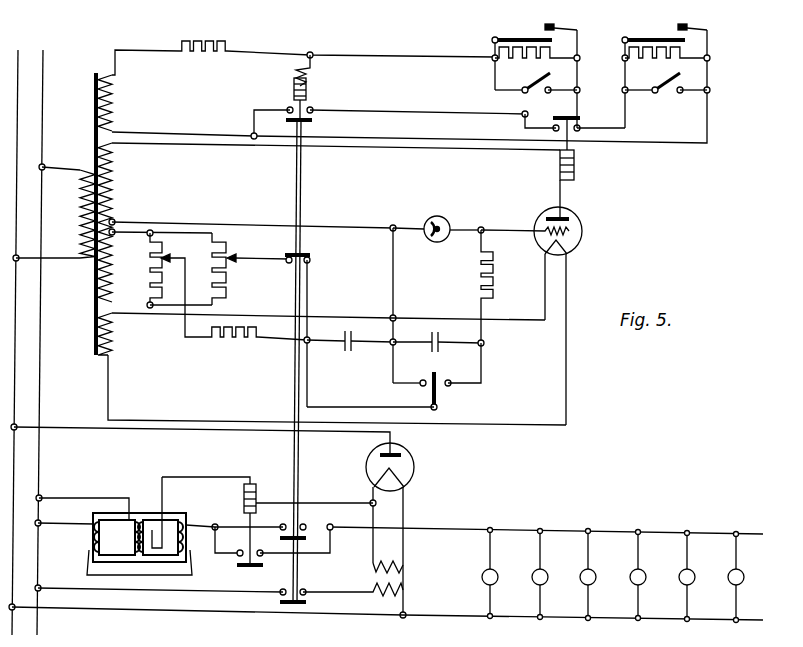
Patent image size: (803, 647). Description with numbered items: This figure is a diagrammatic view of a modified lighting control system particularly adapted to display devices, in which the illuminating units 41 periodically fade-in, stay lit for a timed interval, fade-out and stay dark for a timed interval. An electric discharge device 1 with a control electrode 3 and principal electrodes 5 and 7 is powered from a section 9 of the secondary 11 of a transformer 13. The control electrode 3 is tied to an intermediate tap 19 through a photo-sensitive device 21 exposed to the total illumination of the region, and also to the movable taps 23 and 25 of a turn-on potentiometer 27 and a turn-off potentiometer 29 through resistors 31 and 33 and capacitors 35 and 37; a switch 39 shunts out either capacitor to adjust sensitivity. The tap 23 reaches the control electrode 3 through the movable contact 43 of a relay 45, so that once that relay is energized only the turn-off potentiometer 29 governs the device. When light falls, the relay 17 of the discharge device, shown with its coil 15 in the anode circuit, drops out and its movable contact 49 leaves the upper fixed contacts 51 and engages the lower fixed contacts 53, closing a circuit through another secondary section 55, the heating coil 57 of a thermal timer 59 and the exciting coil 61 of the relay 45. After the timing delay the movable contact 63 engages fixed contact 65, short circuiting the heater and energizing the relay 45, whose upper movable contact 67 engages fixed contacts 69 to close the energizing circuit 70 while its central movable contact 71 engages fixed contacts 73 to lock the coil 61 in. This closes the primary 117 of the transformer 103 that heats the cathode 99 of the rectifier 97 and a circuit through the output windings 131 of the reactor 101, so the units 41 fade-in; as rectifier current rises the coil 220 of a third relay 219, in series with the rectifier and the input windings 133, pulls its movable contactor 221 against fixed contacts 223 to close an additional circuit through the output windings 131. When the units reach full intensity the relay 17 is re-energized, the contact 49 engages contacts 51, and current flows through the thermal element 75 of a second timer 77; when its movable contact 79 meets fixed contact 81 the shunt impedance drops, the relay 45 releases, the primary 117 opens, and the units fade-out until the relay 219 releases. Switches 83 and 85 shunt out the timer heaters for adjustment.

The electric discharge device 1 is at (543, 218).
The control electrode 3 is at (541, 229).
The anode 5 is at (566, 214).
The principal electrode 7 is at (576, 247).
The section of the secondary 9 is at (113, 192).
The secondary 11 is at (134, 163).
The transformer 13 is at (80, 161).
The relay coil 15 is at (575, 165).
The relay 17 is at (563, 137).
The intermediate tap 19 is at (114, 222).
The photo-sensitive device 21 is at (440, 220).
The movable tap 23 is at (258, 248).
The movable tap 25 is at (185, 286).
The turn-on potentiometer 27 is at (227, 286).
The turn-off potentiometer 29 is at (148, 276).
The resistor 31 is at (494, 271).
The resistor 33 is at (233, 338).
The capacitor 35 is at (435, 351).
The capacitor 37 is at (347, 351).
The switch 39 is at (437, 397).
The illuminating units 41 is at (522, 584).
The movable contact 43 is at (309, 253).
The relay 45 is at (299, 97).
The movable contact 49 is at (582, 119).
The upper fixed contacts 51 is at (564, 116).
The lower fixed contacts 53 is at (553, 129).
The section of the secondary 55 is at (113, 110).
The heating coil 57 is at (663, 62).
The thermal timer 59 is at (682, 66).
The exciting coil 61 is at (294, 92).
The movable contact 63 is at (680, 30).
The fixed contact 65 is at (689, 26).
The upper movable contact 67 is at (306, 538).
The fixed contacts 69 is at (304, 524).
The energizing circuit 70 is at (267, 520).
The central movable contact 71 is at (313, 122).
The fixed contacts 73 is at (287, 113).
The thermal element 75 is at (526, 62).
The second timer 77 is at (528, 66).
The movable contact 79 is at (546, 30).
The fixed contact 81 is at (556, 26).
The switch 83 is at (666, 92).
The switch 85 is at (527, 105).
The rectifier 97 is at (403, 467).
The cathode 99 is at (371, 474).
The reactor 101 is at (142, 526).
The transformer 103 is at (438, 575).
The primary 117 is at (405, 588).
The output windings 131 is at (92, 546).
The input windings 133 is at (150, 520).
The third relay 219 is at (290, 522).
The coil 220 is at (253, 478).
The movable contactor 221 is at (252, 567).
The fixed contacts 223 is at (239, 552).